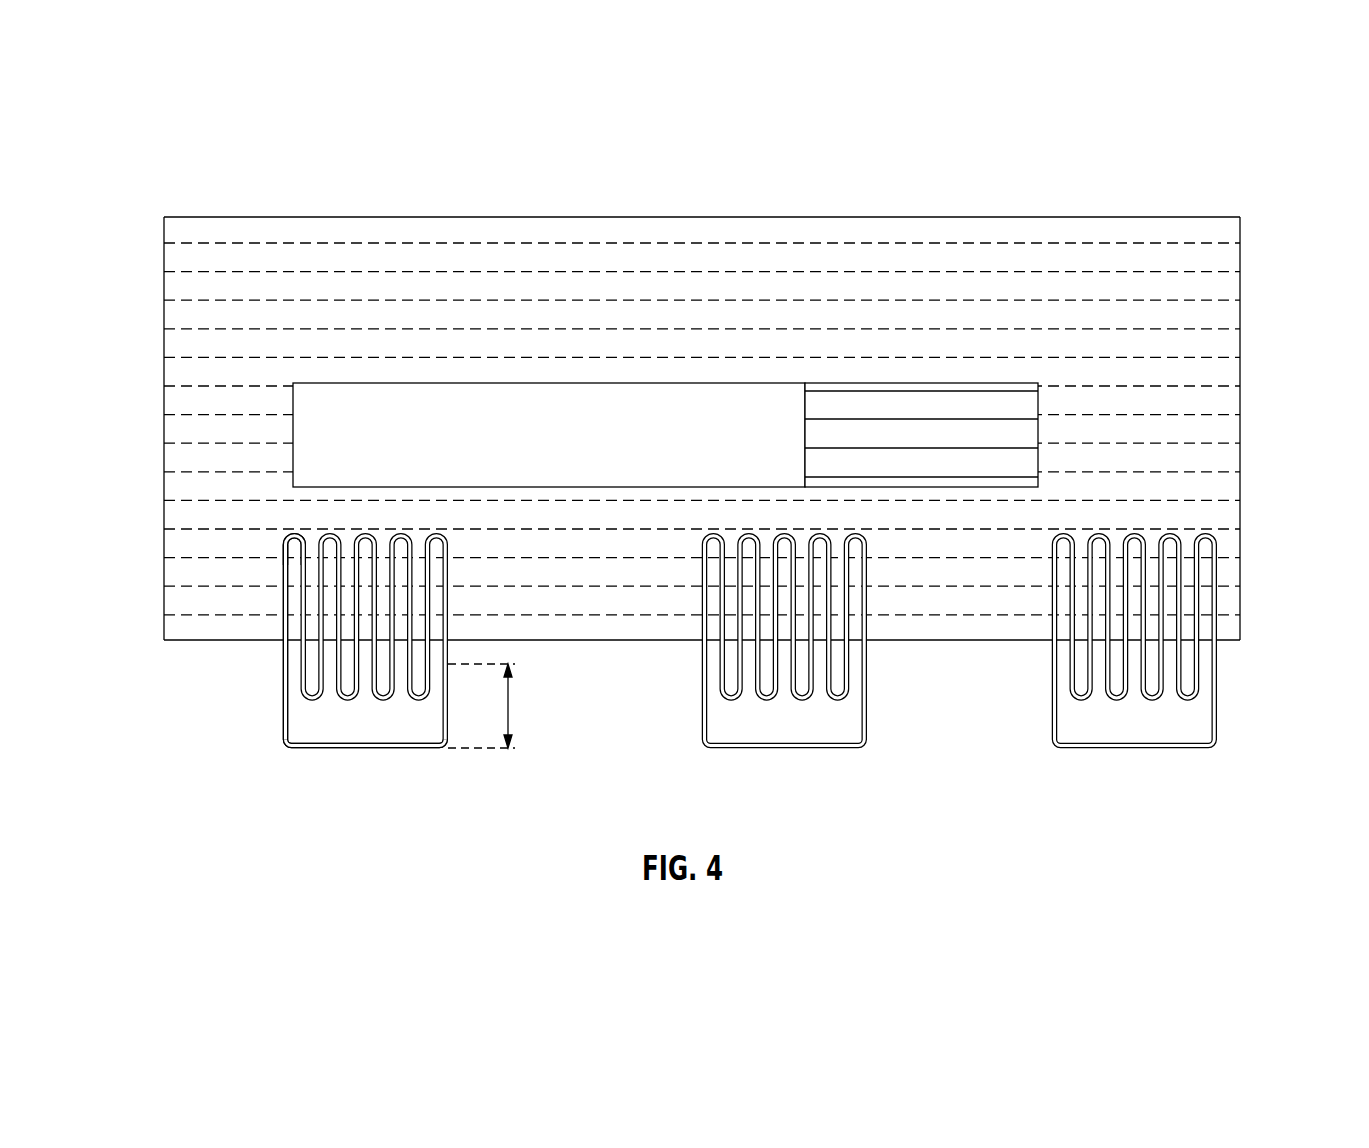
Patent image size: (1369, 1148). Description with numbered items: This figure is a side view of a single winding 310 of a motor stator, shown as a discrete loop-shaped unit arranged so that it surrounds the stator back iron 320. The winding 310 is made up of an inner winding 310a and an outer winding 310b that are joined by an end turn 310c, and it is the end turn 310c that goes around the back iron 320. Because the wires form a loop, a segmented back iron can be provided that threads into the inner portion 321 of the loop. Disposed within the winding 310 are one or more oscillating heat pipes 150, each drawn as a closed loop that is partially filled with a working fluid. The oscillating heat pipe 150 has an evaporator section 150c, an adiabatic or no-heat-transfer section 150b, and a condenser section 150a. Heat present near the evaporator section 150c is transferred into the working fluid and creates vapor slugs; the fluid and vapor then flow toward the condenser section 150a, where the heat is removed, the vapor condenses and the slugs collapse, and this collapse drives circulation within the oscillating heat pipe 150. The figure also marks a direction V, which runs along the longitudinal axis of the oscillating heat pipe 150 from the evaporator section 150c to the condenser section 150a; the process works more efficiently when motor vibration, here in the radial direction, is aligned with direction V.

The winding 310 is at (1073, 188).
The inner winding 310a is at (545, 605).
The outer winding 310b is at (265, 322).
The end turn 310c is at (1240, 517).
The stator back iron 320 is at (930, 383).
The inner portion 321 is at (323, 435).
The oscillating heat pipe 150 is at (280, 715).
The condenser section 150a is at (315, 752).
The adiabatic section 150b is at (280, 672).
The evaporator section 150c is at (330, 535).
The direction V is at (510, 708).